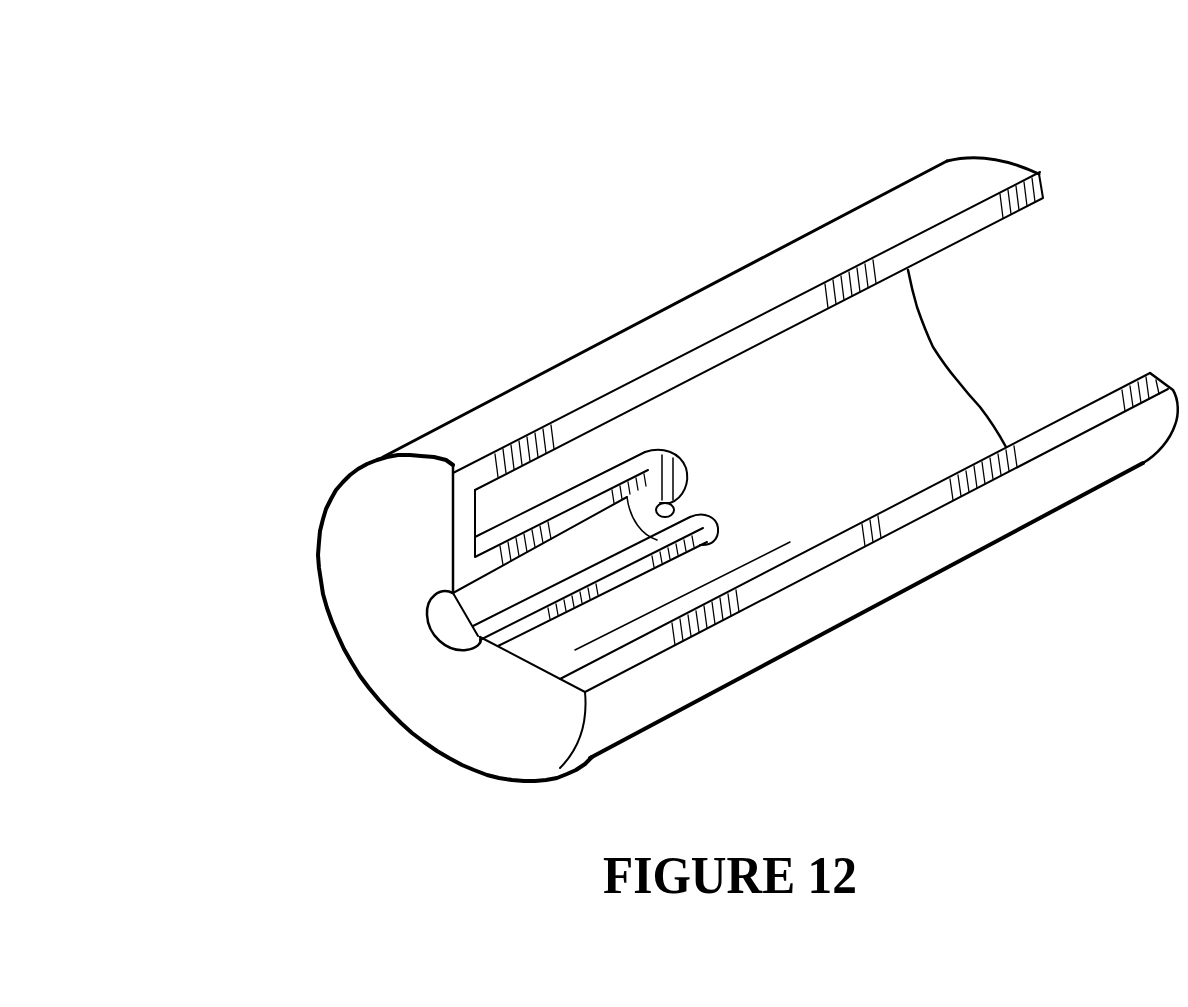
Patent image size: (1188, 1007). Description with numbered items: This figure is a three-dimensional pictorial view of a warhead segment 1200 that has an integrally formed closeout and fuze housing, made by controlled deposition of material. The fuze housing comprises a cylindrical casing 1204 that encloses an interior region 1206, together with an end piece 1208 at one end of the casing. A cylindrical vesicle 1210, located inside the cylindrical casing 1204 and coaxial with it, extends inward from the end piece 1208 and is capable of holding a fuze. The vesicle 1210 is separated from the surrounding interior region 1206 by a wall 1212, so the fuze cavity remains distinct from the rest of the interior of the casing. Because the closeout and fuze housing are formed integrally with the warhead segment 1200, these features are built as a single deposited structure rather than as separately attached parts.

The warhead segment 1200 is at (533, 170).
The cylindrical casing 1204 is at (883, 183).
The interior region 1206 is at (947, 397).
The end piece 1208 is at (472, 655).
The cylindrical vesicle 1210 is at (453, 567).
The wall 1212 is at (643, 513).